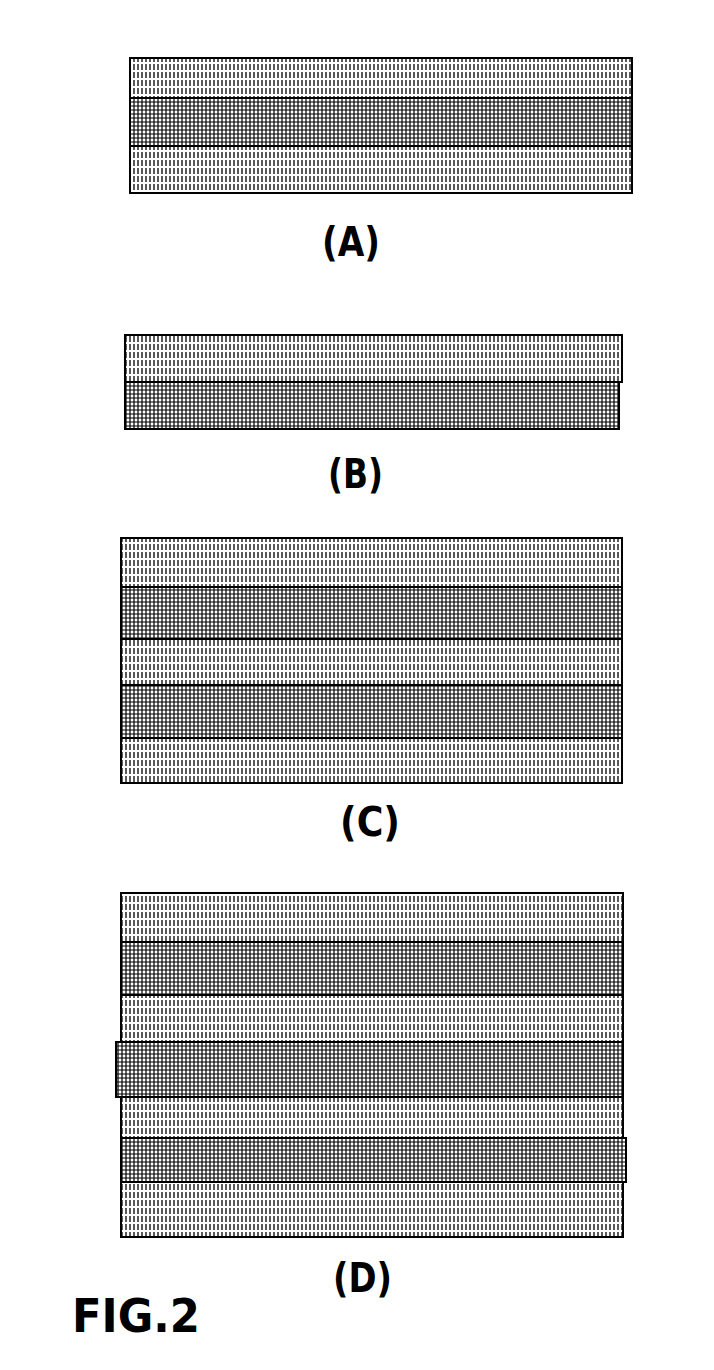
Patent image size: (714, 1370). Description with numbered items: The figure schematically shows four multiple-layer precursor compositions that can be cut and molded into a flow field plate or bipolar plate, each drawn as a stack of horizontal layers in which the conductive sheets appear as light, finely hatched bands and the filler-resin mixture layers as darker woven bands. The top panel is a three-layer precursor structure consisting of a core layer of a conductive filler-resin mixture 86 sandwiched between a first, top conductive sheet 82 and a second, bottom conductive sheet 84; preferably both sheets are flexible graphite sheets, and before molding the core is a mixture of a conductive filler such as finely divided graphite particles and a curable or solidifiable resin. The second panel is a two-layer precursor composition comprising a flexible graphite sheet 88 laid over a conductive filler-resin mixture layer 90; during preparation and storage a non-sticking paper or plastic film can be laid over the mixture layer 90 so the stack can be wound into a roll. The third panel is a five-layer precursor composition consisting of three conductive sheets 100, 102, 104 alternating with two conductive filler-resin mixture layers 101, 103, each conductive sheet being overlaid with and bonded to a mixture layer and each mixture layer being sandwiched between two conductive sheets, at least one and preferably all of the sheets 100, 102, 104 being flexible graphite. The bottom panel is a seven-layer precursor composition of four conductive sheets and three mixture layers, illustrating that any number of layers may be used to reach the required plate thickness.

The first conductive sheet 82 is at (148, 78).
The conductive filler-resin mixture 86 is at (138, 123).
The second conductive sheet 84 is at (155, 173).
The FG sheet 88 is at (150, 360).
The conductive filler-resin mixture layer 90 is at (147, 410).
The conductive sheet 100 is at (150, 568).
The conductive filler-resin mixture layer 101 is at (150, 612).
The conductive sheet 102 is at (148, 663).
The conductive filler-resin mixture layer 103 is at (121, 717).
The conductive sheet 104 is at (148, 758).